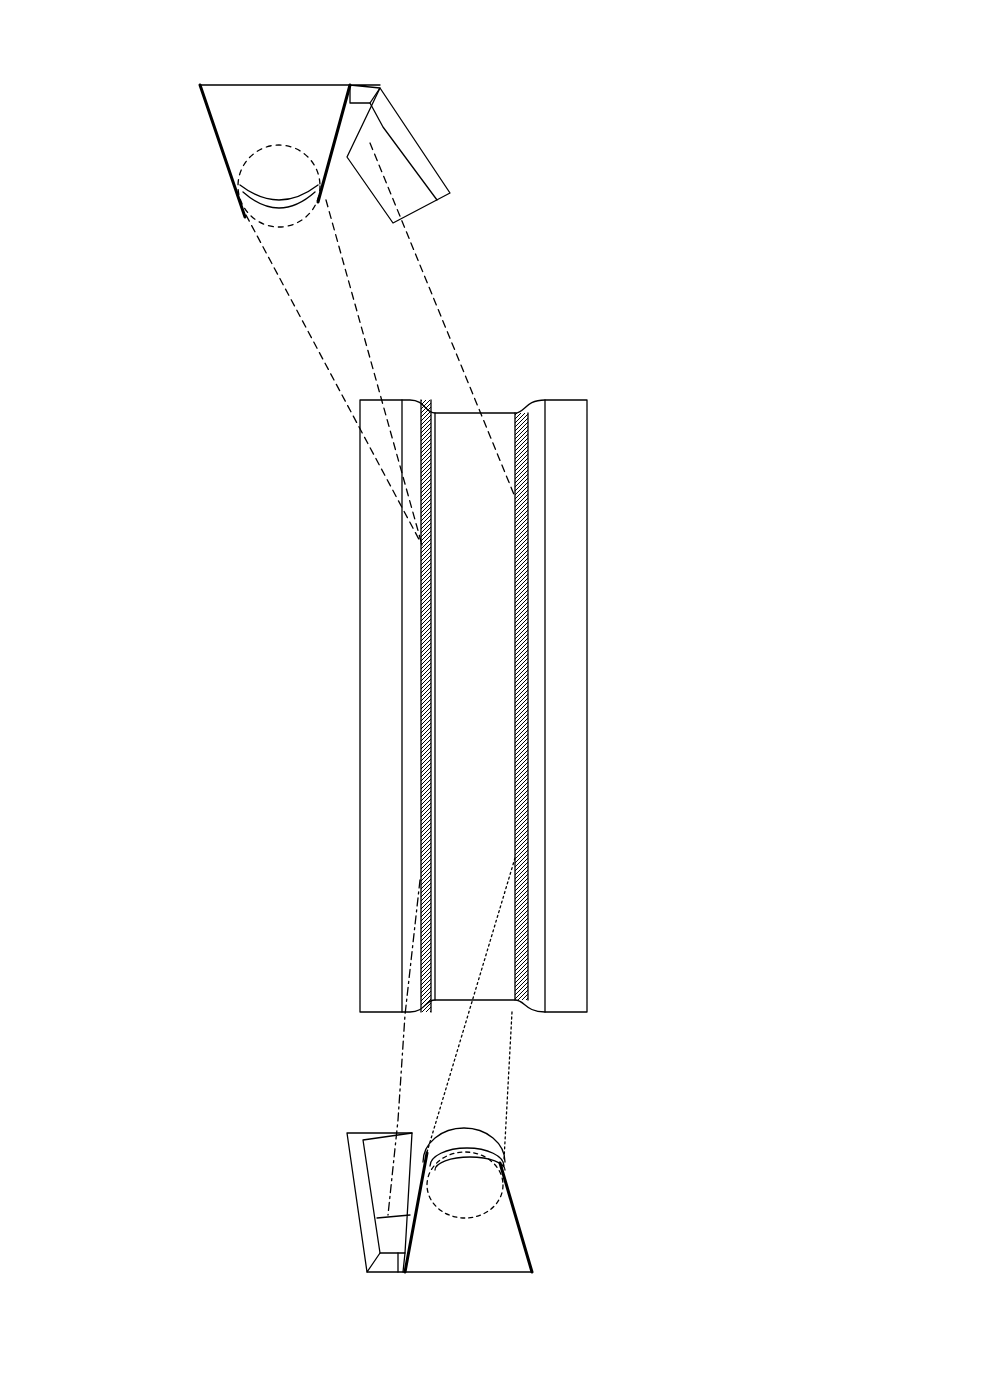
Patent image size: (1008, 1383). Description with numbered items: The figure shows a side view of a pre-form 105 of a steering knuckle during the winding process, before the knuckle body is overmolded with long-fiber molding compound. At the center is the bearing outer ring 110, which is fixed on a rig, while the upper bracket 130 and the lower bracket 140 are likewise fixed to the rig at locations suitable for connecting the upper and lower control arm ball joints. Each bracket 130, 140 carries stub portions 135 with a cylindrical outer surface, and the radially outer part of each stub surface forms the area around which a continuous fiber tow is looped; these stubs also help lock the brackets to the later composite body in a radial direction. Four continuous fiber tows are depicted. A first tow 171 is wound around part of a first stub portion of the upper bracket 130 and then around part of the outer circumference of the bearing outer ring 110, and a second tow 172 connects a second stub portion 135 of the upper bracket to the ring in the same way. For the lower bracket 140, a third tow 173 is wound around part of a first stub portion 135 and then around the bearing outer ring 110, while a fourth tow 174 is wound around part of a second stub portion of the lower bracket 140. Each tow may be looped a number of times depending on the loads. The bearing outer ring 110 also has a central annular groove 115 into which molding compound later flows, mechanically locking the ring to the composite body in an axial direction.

The optical system 105 is at (238, 674).
The bearing outer ring 110 is at (547, 658).
The central annular groove 115 is at (497, 423).
The upper bracket 130 is at (236, 110).
The stub portions 135 is at (415, 190).
The lower bracket 140 is at (487, 1247).
The first tow 171 is at (302, 320).
The second tow 172 is at (435, 298).
The third tow 173 is at (407, 1032).
The fourth tow 174 is at (507, 1088).